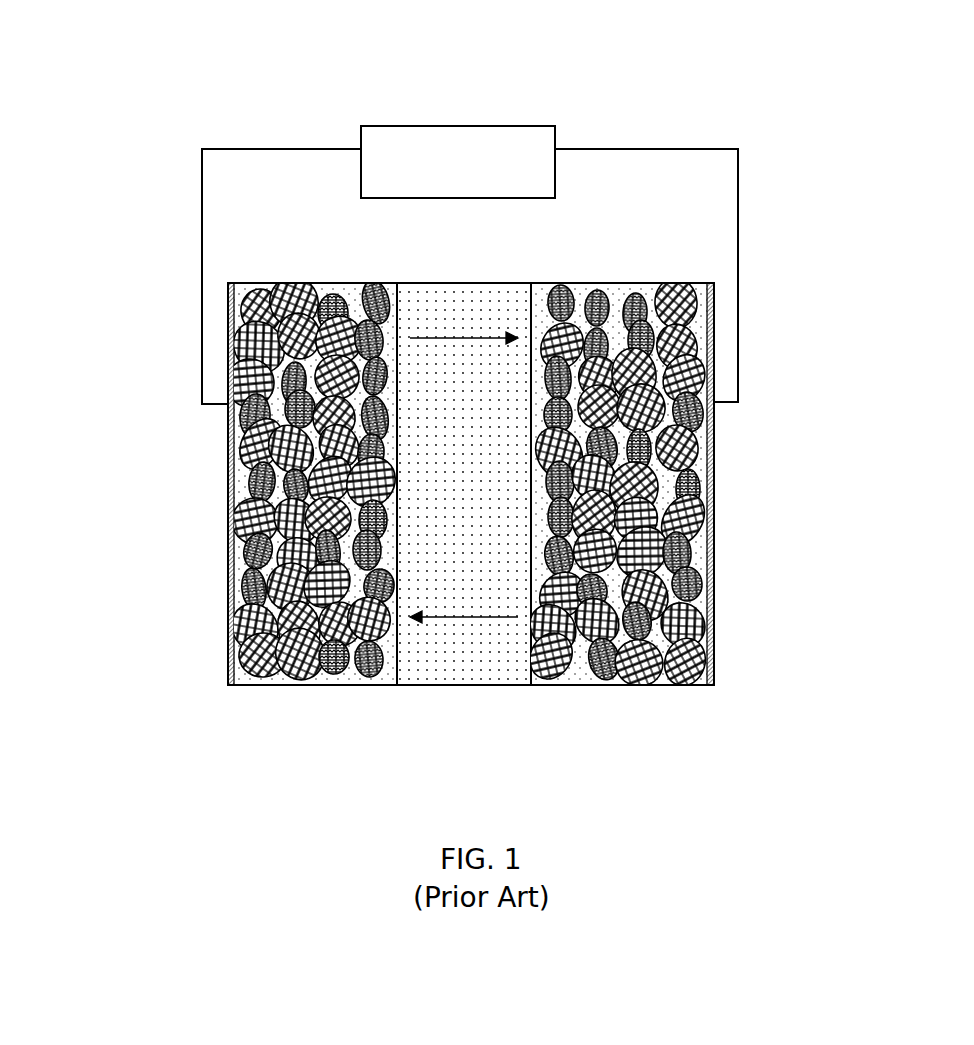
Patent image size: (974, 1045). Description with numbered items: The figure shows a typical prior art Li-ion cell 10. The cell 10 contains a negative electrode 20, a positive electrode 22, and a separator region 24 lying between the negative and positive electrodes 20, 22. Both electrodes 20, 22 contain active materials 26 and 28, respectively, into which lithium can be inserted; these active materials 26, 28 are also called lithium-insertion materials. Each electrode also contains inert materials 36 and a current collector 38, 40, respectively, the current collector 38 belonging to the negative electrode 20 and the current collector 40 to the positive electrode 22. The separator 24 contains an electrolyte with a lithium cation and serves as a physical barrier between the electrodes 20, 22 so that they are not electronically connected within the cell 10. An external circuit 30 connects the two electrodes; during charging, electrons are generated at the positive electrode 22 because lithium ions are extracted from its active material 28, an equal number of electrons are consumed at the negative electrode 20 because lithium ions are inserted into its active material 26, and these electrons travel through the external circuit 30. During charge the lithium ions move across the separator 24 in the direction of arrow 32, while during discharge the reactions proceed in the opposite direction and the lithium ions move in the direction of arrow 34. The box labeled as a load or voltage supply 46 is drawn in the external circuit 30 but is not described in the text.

The Li-ion cell 10 is at (838, 291).
The negative electrode 20 is at (152, 375).
The positive electrode 22 is at (818, 652).
The separator region 24 is at (483, 506).
The active material of the negative electrode 26 is at (248, 283).
The active material of the positive electrode 28 is at (686, 283).
The external circuit 30 is at (690, 149).
The arrow 32 is at (486, 619).
The arrow 34 is at (440, 338).
The inert materials 36 is at (240, 568).
The current collector of the negative electrode 38 is at (230, 647).
The current collector of the positive electrode 40 is at (714, 523).
The load/voltage supply 46 is at (510, 126).